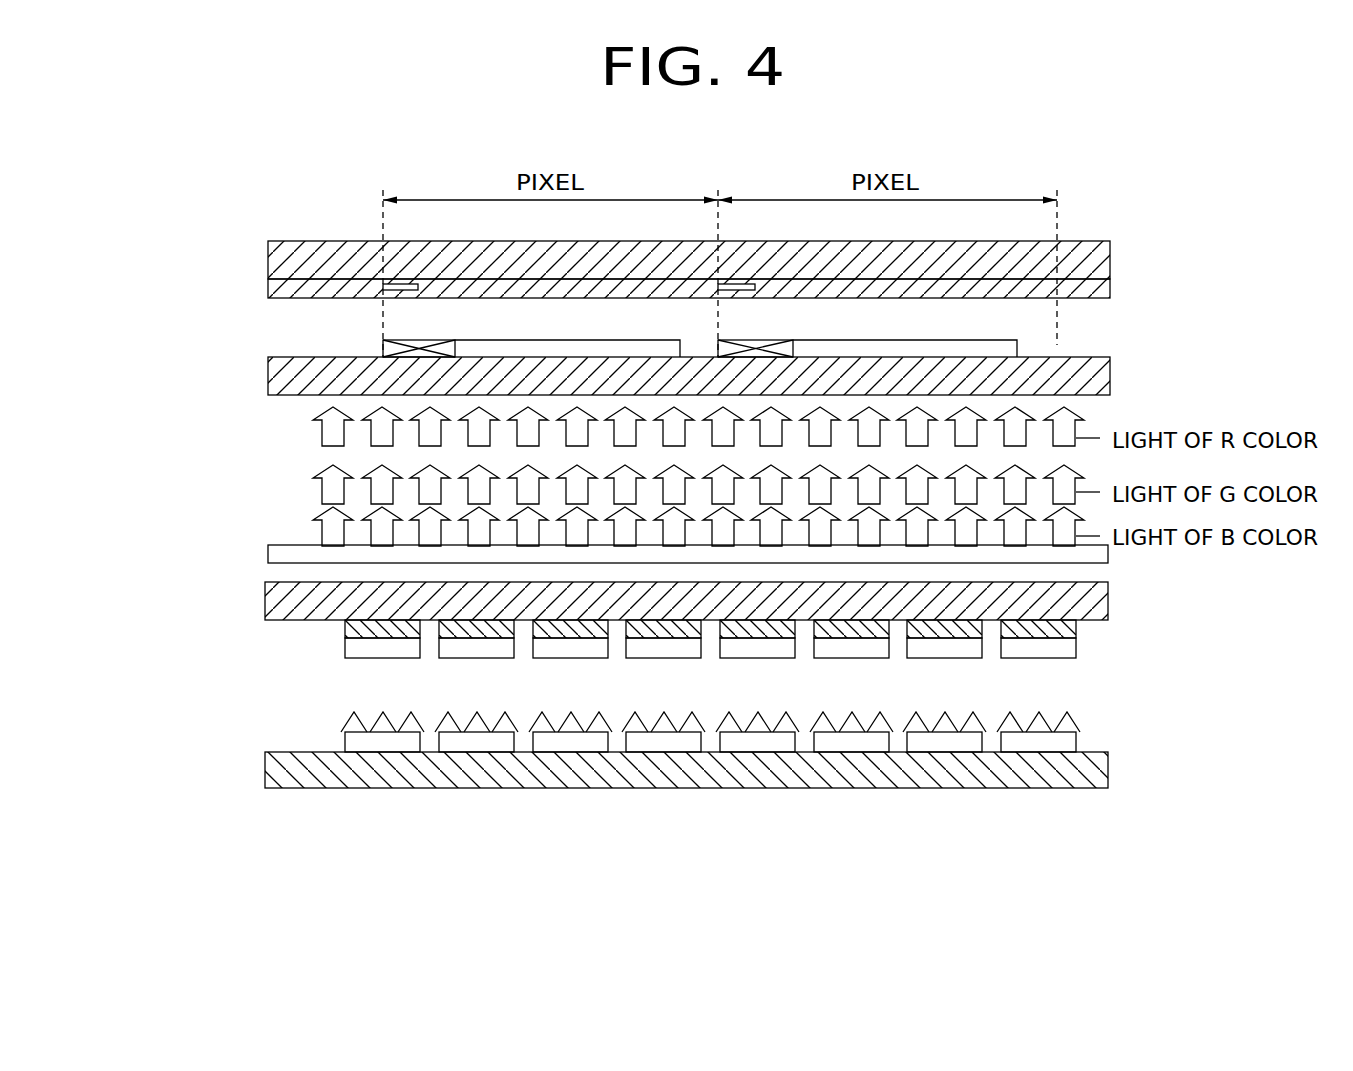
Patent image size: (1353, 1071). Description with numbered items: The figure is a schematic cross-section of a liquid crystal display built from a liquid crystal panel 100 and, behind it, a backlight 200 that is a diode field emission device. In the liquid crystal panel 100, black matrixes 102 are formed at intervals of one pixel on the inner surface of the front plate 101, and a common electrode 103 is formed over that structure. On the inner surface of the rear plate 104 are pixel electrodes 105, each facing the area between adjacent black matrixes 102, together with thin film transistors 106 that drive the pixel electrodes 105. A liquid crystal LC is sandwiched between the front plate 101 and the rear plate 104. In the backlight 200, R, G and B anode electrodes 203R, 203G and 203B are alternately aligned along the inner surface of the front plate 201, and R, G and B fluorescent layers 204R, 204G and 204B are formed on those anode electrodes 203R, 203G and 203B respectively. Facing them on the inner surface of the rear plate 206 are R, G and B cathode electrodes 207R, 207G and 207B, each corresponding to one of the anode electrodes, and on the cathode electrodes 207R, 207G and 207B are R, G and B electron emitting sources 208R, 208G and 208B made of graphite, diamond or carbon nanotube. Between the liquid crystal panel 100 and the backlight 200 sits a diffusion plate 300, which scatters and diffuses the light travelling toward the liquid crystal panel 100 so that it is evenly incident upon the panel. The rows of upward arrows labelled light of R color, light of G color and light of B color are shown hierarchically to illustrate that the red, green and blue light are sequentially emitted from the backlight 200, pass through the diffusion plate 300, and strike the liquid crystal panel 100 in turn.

The liquid crystal panel 100 is at (258, 303).
The front plate 101 is at (1100, 270).
The black matrix 102 is at (403, 284).
The common electrode 103 is at (1100, 296).
The rear plate 104 is at (1100, 392).
The pixel electrode 105 is at (567, 348).
The thin film transistor 106 is at (422, 346).
The liquid crystal LC is at (1078, 339).
The backlight 200 is at (258, 717).
The front plate 201 is at (1097, 612).
The R anode electrode 203R is at (949, 626).
The G anode electrode 203G is at (1043, 626).
The B anode electrode 203B is at (856, 626).
The R fluorescent layer 204R is at (919, 808).
The G fluorescent layer 204G is at (1013, 808).
The B fluorescent layer 204B is at (826, 808).
The rear plate 206 is at (1097, 779).
The R cathode electrode 207R is at (982, 877).
The G cathode electrode 207G is at (1076, 877).
The B cathode electrode 207B is at (889, 877).
The R electron emitting source 208R is at (947, 840).
The G electron emitting source 208G is at (1041, 840).
The B electron emitting source 208B is at (854, 840).
The diffusion plate 300 is at (268, 555).